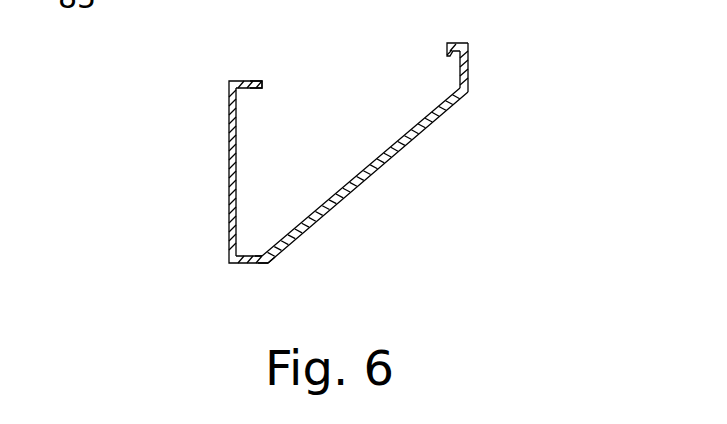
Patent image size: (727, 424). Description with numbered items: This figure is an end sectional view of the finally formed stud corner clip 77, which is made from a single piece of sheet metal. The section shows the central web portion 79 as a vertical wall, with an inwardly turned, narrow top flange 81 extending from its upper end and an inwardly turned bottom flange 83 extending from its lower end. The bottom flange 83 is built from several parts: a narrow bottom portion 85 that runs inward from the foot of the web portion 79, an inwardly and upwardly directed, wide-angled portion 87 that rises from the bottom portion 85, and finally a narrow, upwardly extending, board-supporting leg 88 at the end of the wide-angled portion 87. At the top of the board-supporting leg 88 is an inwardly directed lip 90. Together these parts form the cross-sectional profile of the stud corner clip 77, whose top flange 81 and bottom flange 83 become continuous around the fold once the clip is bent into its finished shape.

The stud corner clip 77 is at (229, 84).
The central web portion 79 is at (229, 139).
The top flange 81 is at (250, 80).
The bottom flange 83 is at (266, 262).
The bottom portion 85 is at (246, 266).
The wide-angled portion 87 is at (405, 145).
The board-supporting leg 88 is at (470, 70).
The lip 90 is at (452, 45).